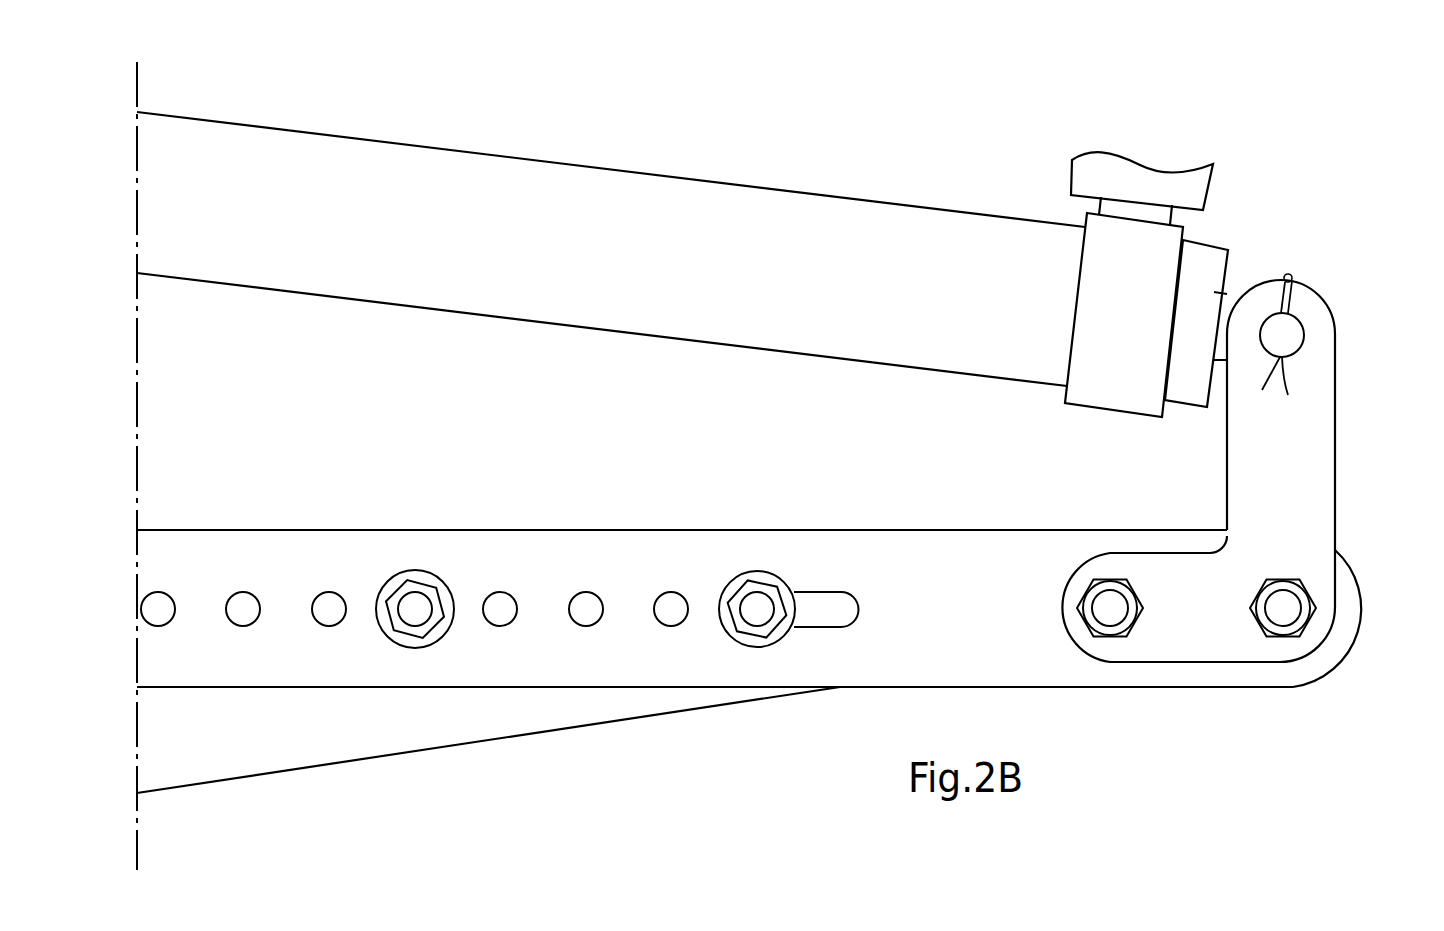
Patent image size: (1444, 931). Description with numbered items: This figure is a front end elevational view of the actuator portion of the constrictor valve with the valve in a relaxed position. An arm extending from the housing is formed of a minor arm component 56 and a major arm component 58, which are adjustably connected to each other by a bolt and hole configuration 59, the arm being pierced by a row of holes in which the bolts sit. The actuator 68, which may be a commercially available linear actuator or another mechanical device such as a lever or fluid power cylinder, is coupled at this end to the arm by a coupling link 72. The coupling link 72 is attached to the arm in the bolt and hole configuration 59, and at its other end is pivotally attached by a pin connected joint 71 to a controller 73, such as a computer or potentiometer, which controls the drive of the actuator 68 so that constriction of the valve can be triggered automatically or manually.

The minor arm component 56 is at (649, 658).
The major arm component 58 is at (345, 736).
The bolt and hole configuration 59 is at (412, 605).
The actuator 68 is at (527, 202).
The pin connected joint 71 is at (1292, 337).
The coupling link 72 is at (1310, 467).
The controller 73 is at (1103, 178).